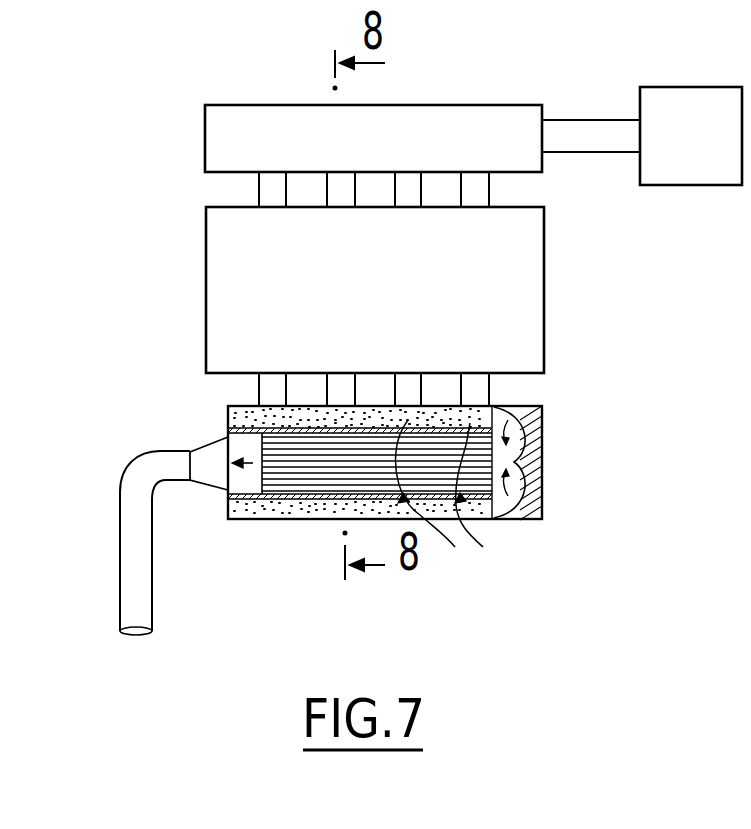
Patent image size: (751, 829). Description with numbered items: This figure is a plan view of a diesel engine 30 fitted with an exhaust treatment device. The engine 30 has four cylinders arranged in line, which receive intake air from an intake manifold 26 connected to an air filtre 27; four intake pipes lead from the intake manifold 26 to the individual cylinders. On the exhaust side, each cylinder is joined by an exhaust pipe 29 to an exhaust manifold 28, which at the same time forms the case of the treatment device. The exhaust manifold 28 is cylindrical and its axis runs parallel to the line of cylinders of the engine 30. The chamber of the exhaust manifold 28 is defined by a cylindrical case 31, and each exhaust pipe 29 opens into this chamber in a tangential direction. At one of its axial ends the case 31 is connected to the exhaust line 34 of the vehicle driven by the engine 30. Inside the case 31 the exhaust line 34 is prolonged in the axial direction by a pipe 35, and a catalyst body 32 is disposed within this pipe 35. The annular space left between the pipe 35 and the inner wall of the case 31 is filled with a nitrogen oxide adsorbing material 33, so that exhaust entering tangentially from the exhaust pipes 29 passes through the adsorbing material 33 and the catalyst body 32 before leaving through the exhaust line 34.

The intake manifold 26 is at (460, 110).
The air filtre 27 is at (672, 103).
The exhaust manifold 28 is at (519, 530).
The exhaust pipe 29 is at (337, 389).
The diesel engine 30 is at (546, 270).
The cylindrical case 31 is at (274, 518).
The catalyst body 32 is at (487, 502).
The nitrogen oxide adsorbing material 33 is at (252, 510).
The exhaust line 34 is at (127, 585).
The pipe 35 is at (438, 500).